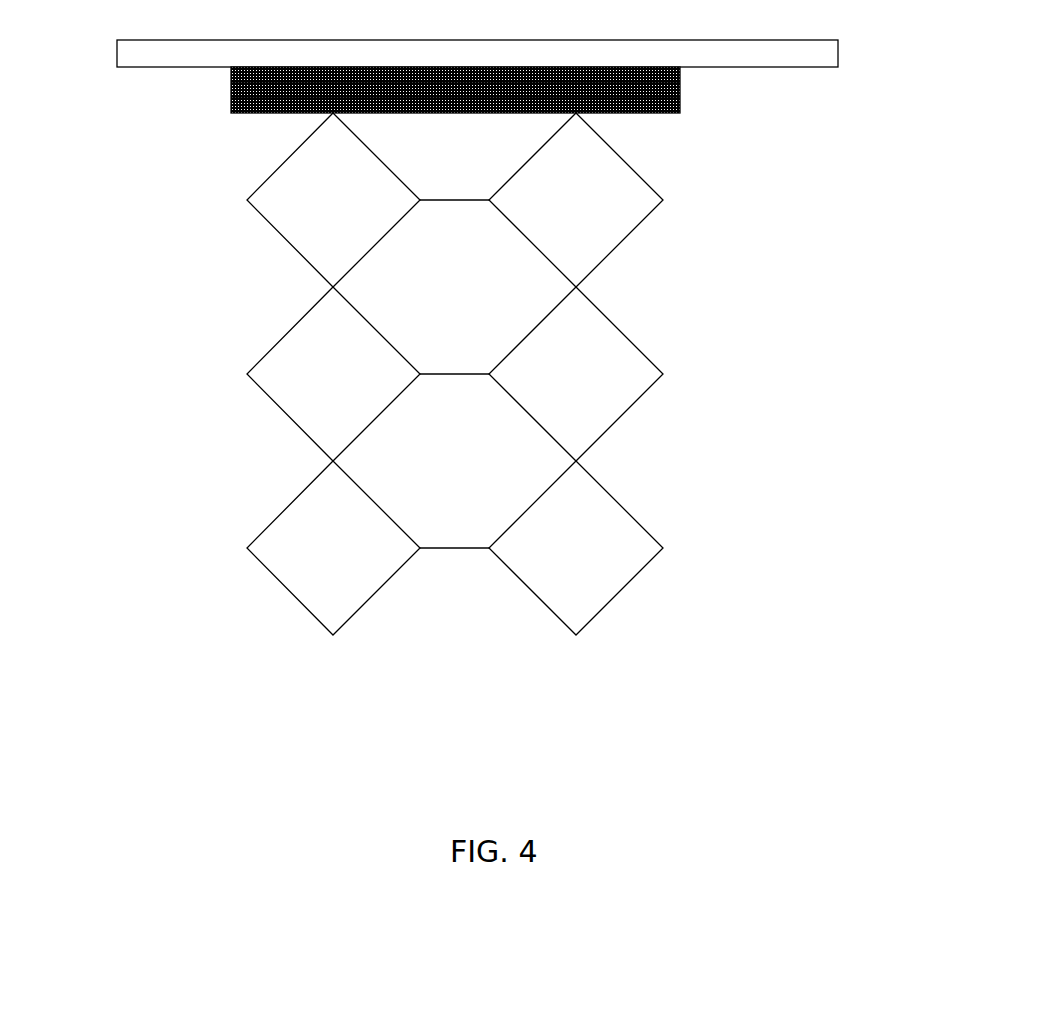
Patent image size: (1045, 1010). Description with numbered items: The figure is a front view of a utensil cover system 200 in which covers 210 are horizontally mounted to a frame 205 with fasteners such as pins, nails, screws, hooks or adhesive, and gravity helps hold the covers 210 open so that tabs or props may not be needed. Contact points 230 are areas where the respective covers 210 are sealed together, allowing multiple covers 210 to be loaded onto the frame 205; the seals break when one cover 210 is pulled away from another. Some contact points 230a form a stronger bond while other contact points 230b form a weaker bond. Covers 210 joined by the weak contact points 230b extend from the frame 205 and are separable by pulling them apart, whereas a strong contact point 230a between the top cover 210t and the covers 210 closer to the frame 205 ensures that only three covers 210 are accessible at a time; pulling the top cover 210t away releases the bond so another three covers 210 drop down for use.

The utensil cover system 200 is at (88, 202).
The frame 205 is at (838, 62).
The cover 210 is at (680, 82).
The top cover 210t is at (663, 200).
The contact point 230 is at (333, 287).
The strong contact point 230a is at (358, 122).
The weak contact point 230b is at (366, 293).